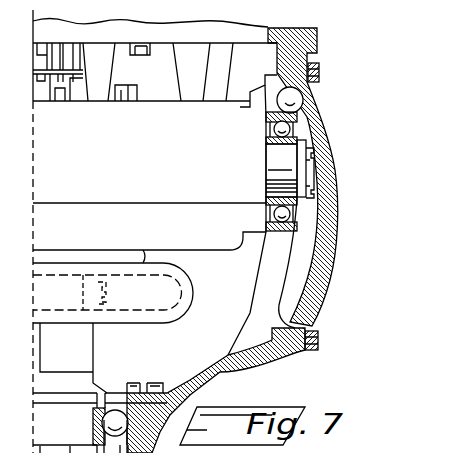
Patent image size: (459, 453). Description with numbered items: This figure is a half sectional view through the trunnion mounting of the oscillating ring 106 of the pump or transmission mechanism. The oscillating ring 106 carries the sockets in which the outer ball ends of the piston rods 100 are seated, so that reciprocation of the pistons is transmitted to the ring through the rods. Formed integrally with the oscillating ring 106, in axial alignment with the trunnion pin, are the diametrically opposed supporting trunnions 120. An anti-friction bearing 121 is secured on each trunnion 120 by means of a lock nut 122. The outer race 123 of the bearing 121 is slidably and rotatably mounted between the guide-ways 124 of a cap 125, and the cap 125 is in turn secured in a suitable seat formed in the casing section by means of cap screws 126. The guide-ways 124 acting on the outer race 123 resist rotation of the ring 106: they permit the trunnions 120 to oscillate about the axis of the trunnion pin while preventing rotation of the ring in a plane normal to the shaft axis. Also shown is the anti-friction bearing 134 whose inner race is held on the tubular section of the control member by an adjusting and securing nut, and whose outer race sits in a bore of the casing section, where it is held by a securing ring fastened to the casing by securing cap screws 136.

The piston rod 100 is at (181, 71).
The oscillating ring 106 is at (240, 108).
The supporting trunnion 120 is at (278, 161).
The anti-friction bearing 121 is at (266, 143).
The lock nut 122 is at (307, 150).
The outer race 123 is at (303, 99).
The guide-way 124 is at (265, 273).
The cap 125 is at (318, 299).
The cap screw 126 is at (312, 350).
The anti-friction bearing 134 is at (113, 406).
The securing cap screw 136 is at (138, 388).